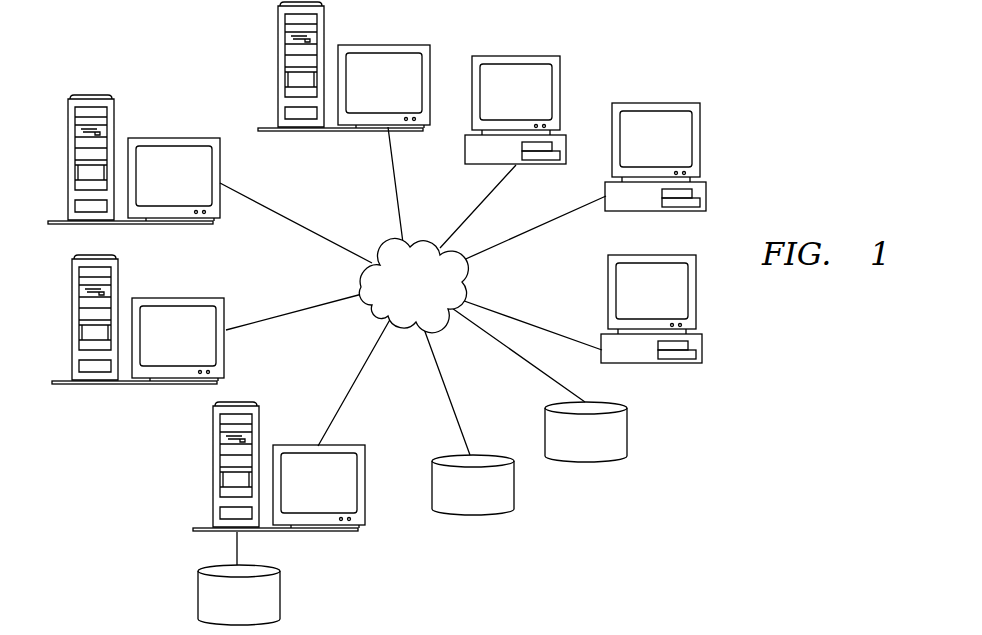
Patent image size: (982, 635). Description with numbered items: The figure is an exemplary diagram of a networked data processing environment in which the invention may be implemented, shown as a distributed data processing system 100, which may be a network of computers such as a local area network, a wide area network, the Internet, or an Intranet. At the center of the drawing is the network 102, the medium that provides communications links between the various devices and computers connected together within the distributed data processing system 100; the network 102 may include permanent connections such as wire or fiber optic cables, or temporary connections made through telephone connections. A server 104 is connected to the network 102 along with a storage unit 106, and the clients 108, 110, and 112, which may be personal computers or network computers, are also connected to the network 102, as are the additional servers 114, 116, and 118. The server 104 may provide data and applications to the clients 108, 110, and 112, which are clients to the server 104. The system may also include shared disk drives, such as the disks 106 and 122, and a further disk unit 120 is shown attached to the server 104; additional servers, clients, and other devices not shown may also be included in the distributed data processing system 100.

The distributed data processing system 100 is at (766, 112).
The network 102 is at (390, 293).
The server 104 is at (301, 496).
The storage unit 106 is at (566, 446).
The client 108 is at (496, 102).
The client 110 is at (636, 148).
The client 112 is at (632, 300).
The additional server 114 is at (160, 348).
The additional server 116 is at (154, 188).
The additional server 118 is at (366, 94).
The storage unit 120 is at (219, 609).
The disk 122 is at (453, 498).